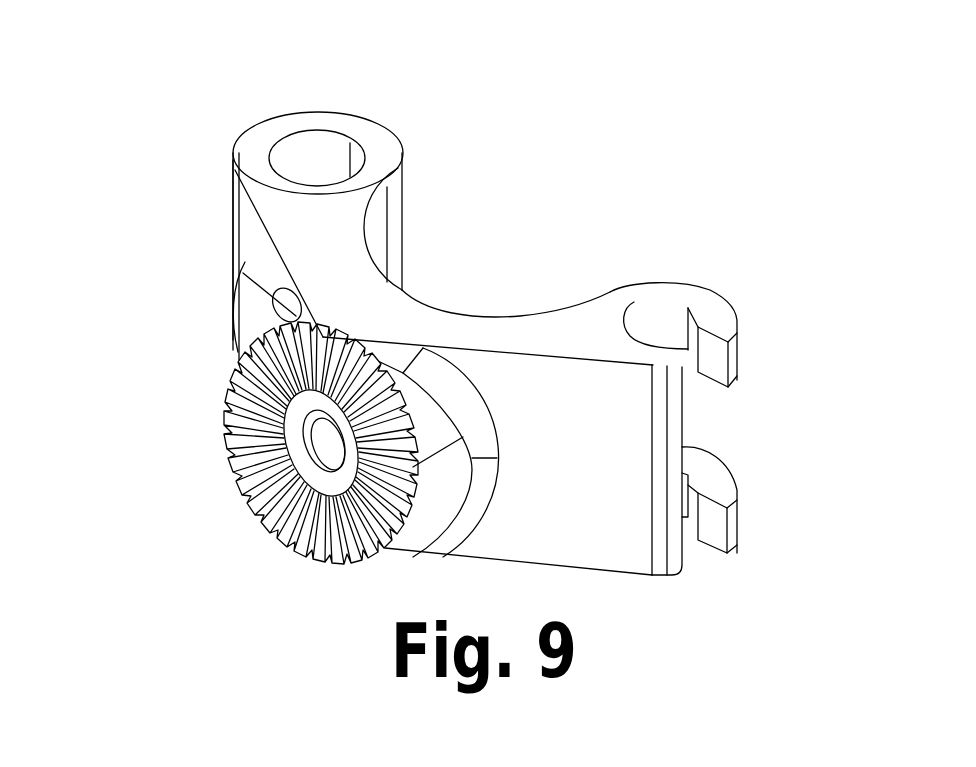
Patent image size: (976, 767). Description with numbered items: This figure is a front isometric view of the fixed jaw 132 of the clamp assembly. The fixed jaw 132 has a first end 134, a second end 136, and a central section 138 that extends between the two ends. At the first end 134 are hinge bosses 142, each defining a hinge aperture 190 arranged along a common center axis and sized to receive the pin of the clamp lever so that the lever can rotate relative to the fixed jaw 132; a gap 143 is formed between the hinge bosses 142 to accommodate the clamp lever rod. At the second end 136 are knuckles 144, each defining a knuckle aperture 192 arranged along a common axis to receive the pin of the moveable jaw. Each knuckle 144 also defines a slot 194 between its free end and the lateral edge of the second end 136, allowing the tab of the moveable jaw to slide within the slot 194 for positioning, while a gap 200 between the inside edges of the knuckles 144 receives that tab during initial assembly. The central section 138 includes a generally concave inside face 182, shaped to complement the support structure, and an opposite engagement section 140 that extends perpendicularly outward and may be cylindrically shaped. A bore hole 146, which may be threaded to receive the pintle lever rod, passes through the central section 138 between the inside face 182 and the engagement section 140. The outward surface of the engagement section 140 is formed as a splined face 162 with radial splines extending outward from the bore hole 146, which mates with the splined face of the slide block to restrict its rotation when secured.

The fixed jaw 132 is at (540, 210).
The first end 134 is at (220, 170).
The second end 136 is at (667, 597).
The central section 138 is at (450, 277).
The engagement section 140 is at (433, 505).
The hinge boss 142 is at (282, 112).
The gap 143 is at (237, 265).
The knuckle 144 is at (633, 302).
The bore hole 146 is at (330, 442).
The splined face 162 is at (293, 525).
The inside face 182 is at (373, 260).
The hinge aperture 190 is at (327, 160).
The knuckle aperture 192 is at (677, 317).
The slot 194 is at (700, 343).
The gap 200 is at (710, 427).